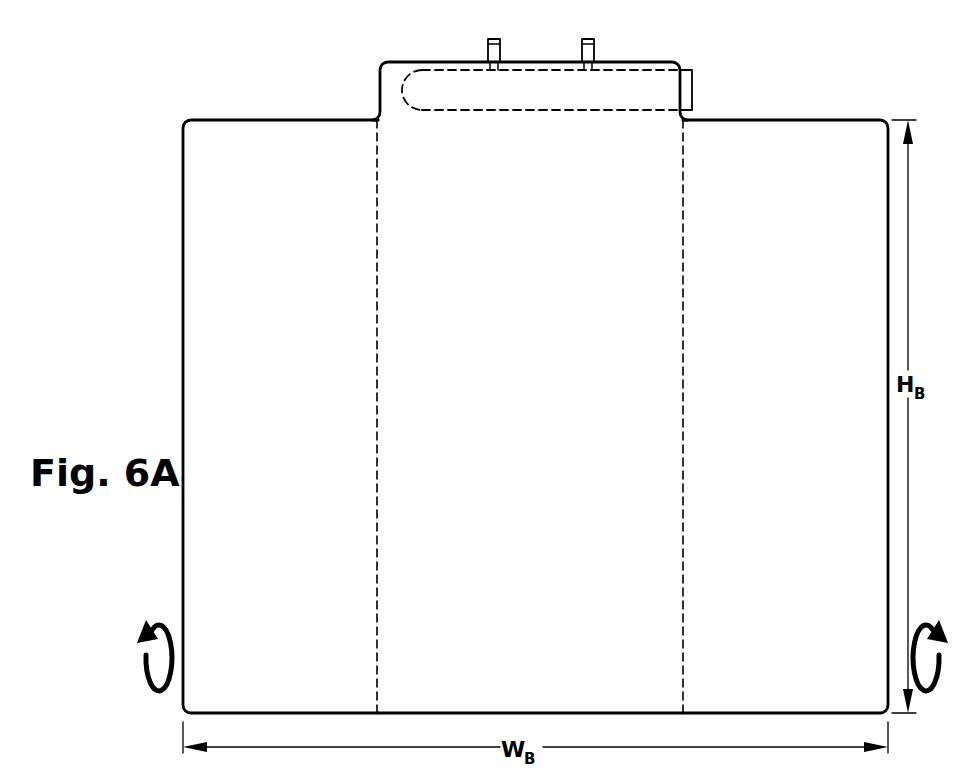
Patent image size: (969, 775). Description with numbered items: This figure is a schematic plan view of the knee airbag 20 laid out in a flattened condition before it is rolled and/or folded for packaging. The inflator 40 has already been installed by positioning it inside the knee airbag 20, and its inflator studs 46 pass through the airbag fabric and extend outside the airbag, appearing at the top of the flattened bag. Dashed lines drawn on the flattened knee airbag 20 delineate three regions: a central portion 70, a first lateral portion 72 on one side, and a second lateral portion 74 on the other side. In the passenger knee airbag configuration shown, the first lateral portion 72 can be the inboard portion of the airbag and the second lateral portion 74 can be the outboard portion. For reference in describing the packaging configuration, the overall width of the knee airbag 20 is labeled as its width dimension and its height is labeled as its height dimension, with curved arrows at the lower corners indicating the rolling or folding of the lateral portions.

The knee airbag 20 is at (145, 364).
The inflator 40 is at (686, 87).
The inflator studs 46 is at (494, 52).
The central portion 70 is at (535, 625).
The first lateral portion 72 is at (290, 588).
The second lateral portion 74 is at (770, 590).